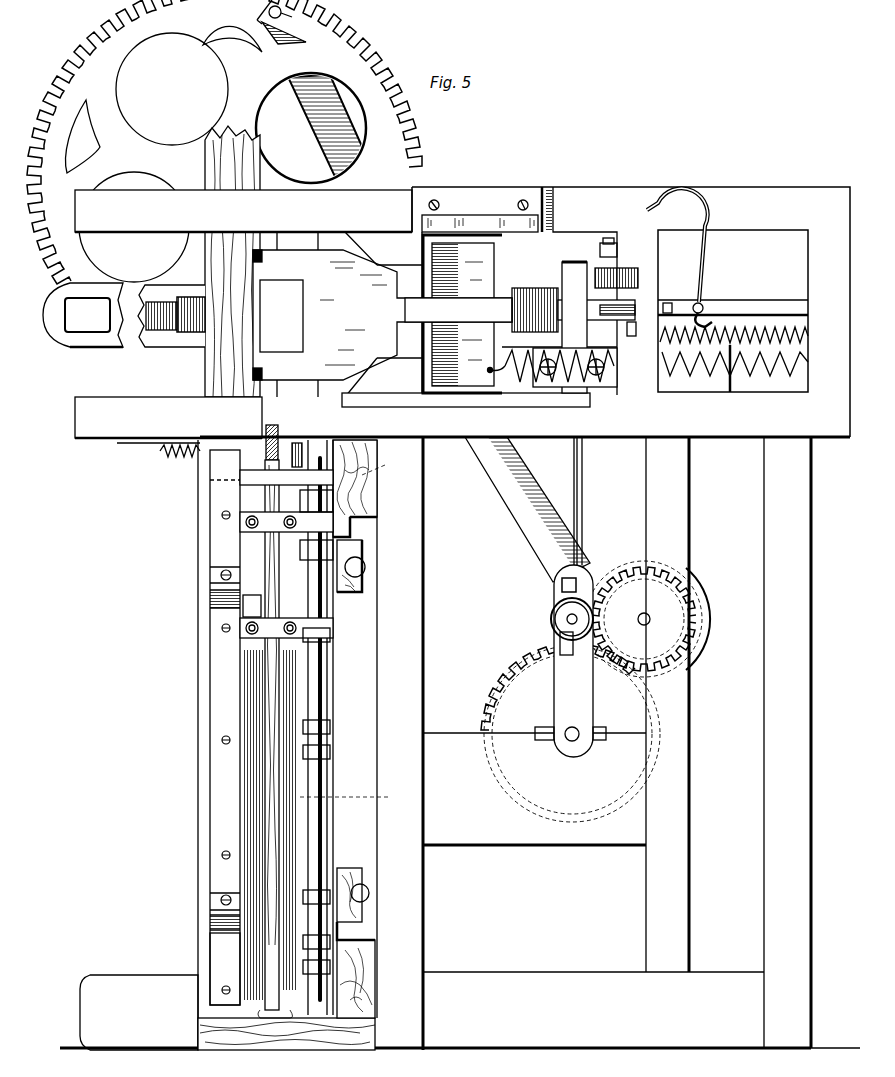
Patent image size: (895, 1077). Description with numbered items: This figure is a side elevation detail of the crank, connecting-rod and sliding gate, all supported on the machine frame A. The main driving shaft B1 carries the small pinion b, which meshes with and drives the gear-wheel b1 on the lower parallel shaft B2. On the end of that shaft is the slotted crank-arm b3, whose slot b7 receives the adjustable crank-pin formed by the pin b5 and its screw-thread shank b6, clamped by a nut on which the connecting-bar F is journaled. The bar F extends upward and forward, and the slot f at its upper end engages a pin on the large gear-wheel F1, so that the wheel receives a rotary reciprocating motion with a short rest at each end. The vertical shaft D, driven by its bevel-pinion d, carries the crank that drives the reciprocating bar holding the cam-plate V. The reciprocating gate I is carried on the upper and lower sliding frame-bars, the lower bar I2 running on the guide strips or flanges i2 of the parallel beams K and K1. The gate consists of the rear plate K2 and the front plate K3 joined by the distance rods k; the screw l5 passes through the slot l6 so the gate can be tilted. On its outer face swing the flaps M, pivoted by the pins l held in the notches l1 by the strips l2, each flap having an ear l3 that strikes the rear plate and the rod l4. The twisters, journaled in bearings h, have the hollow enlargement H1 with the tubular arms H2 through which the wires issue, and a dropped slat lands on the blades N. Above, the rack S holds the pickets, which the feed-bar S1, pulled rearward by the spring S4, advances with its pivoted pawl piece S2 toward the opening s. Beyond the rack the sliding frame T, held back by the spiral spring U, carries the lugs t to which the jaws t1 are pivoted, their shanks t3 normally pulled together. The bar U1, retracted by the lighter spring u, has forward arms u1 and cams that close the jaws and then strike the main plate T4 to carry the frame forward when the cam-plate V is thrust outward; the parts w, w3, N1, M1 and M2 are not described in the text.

The large gear-wheel F1 is at (224, 142).
The connecting-bar F is at (423, 327).
The slot f is at (281, 22).
The rack S is at (243, 314).
The feed-bar S1 is at (86, 348).
The right-angled piece S2 is at (185, 333).
The opening s is at (279, 448).
The jaws t1 is at (382, 314).
The lugs t is at (383, 314).
The jaw-shanks t3 is at (520, 310).
The sliding frame T is at (596, 312).
The main plate T4 is at (462, 314).
The bevel-pinion d is at (576, 272).
The block w is at (614, 272).
The cam-plate V is at (634, 338).
The spring u is at (540, 361).
The bar U1 is at (748, 308).
The spiral spring U is at (703, 375).
The spring S4 is at (808, 336).
The stud w3 is at (670, 302).
The arms u1 is at (712, 282).
The frame A is at (460, 743).
The blades N is at (248, 1018).
The base piece N' N1 is at (285, 1019).
The front bar or plate K3 is at (210, 528).
The notches or bearings l1 is at (222, 497).
The strips l2 is at (340, 760).
The beam K is at (372, 512).
The rear bar or plate K2 is at (382, 465).
The beam K1 is at (362, 975).
The lower bar I2 is at (362, 878).
The pins l is at (370, 894).
The guide strips or flanges i2 is at (356, 731).
The slot l6 is at (362, 556).
The screw l5 is at (366, 570).
The reciprocating gate I is at (365, 593).
The swinging slats or flaps M is at (269, 735).
The post M' M1 is at (354, 797).
The bracket M2 is at (251, 605).
The rod l4 is at (323, 706).
The rods k is at (286, 464).
The bearings h is at (250, 530).
The ear or lug l3 is at (331, 636).
The tubular arms H2 is at (220, 643).
The hollow enlargement H1 is at (290, 669).
The vertical shaft D is at (583, 506).
The gear-wheel b1 is at (570, 732).
The main driving shaft B1 is at (651, 621).
The pinion b is at (644, 619).
The slotted crank-arm b3 is at (573, 661).
The screw-thread shank b6 is at (551, 619).
The slot b7 is at (578, 585).
The pin b5 is at (568, 648).
The shaft B2 is at (566, 738).